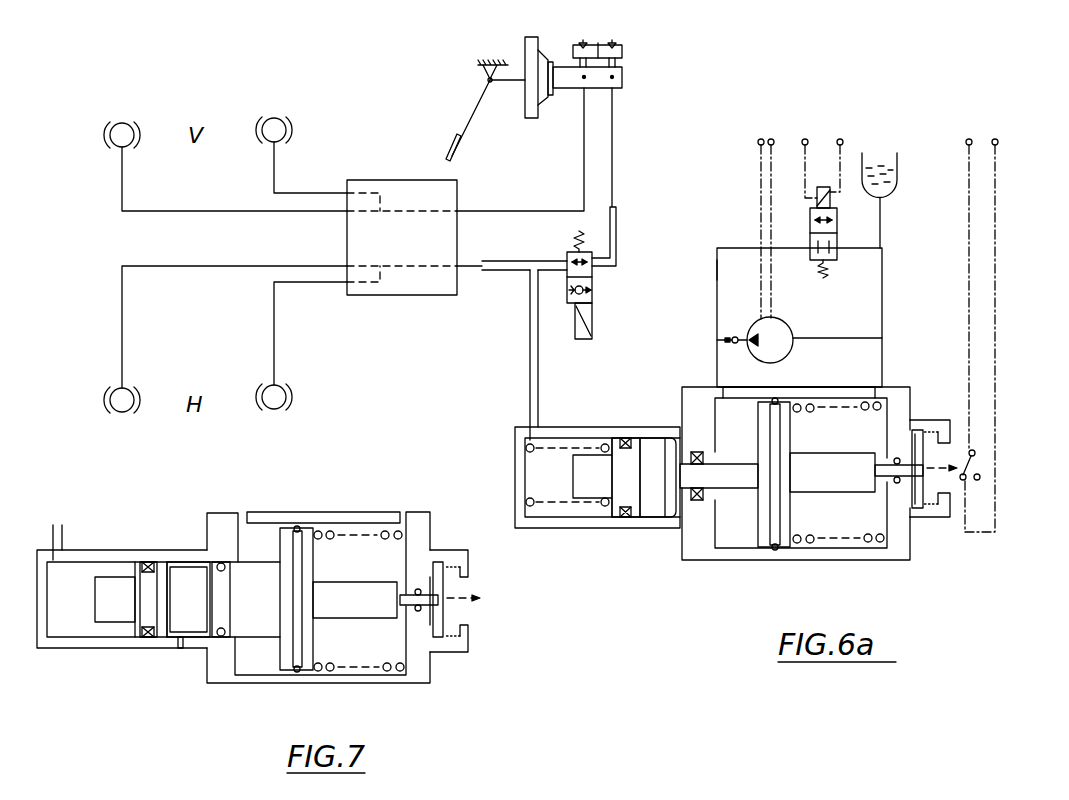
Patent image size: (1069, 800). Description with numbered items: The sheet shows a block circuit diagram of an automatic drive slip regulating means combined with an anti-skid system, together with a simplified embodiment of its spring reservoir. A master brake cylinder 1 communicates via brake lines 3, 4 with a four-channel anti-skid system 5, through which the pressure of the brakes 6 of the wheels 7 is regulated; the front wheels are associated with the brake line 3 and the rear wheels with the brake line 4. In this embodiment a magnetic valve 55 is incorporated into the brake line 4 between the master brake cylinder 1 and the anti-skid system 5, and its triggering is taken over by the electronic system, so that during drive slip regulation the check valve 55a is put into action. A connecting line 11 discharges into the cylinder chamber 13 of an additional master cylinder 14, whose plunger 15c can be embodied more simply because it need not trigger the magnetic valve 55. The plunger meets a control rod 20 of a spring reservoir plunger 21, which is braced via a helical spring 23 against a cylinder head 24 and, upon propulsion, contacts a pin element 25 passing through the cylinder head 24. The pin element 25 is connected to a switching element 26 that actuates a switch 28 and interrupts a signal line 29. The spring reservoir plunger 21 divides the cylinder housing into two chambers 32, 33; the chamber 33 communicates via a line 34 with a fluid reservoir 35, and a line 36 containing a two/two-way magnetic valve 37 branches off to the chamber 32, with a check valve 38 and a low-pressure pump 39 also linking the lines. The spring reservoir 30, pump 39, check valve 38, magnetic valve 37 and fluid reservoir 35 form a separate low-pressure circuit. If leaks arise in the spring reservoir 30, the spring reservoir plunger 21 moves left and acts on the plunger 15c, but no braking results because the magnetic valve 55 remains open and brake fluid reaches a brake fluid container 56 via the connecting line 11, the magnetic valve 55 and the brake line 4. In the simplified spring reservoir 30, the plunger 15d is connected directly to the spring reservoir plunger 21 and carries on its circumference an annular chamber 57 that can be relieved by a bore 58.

In FIG. 6A, the master brake cylinder 1 is at (562, 96).
In FIG. 6A, the brake line 3 is at (584, 176).
In FIG. 6A, the brake line 4 is at (613, 162).
In FIG. 6A, the four-channel anti-skid system 5 is at (347, 293).
In FIG. 6A, the brakes 6 is at (284, 122).
In FIG. 6A, the wheels 7 is at (128, 128).
In FIG. 6A, the connecting line 11 is at (530, 370).
In FIG. 6A, the cylinder chamber 13 is at (562, 489).
In FIG. 6A, the additional master cylinder 14 is at (575, 530).
In FIG. 7, the additional master cylinder 14 is at (100, 649).
In FIG. 6A, the plunger 15c is at (658, 503).
In FIG. 7, the plunger 15d is at (137, 650).
In FIG. 6A, the control rod 20 is at (777, 469).
In FIG. 6A, the spring reservoir plunger 21 is at (765, 548).
In FIG. 7, the spring reservoir plunger 21 is at (285, 660).
In FIG. 6A, the helical spring 23 is at (810, 544).
In FIG. 7, the helical spring 23 is at (332, 533).
In FIG. 6A, the cylinder head 24 is at (900, 546).
In FIG. 6A, the pin element 25 is at (893, 468).
In FIG. 7, the pin element 25 is at (408, 595).
In FIG. 6A, the switching element 26 is at (921, 500).
In FIG. 7, the switching element 26 is at (440, 617).
In FIG. 6A, the switch 28 is at (980, 466).
In FIG. 6A, the signal line 29 is at (969, 320).
In FIG. 6A, the spring reservoir 30 is at (858, 562).
In FIG. 7, the spring reservoir 30 is at (358, 685).
In FIG. 6A, the cylindrical chamber 32 is at (730, 541).
In FIG. 7, the cylindrical chamber 32 is at (257, 553).
In FIG. 6A, the cylindrical chamber 33 is at (840, 530).
In FIG. 7, the cylindrical chamber 33 is at (400, 664).
In FIG. 6A, the line 34 is at (882, 280).
In FIG. 6A, the fluid reservoir 35 is at (898, 168).
In FIG. 6A, the line 36 is at (717, 268).
In FIG. 6A, the 2/2-way magnetic valve 37 is at (838, 240).
In FIG. 6A, the check valve 38 is at (735, 336).
In FIG. 6A, the low-pressure pump 39 is at (788, 327).
In FIG. 6A, the magnetic valve 55 is at (594, 291).
In FIG. 6A, the check valve 55a is at (567, 298).
In FIG. 6A, the brake fluid container 56 is at (622, 54).
In FIG. 7, the annular chamber 57 is at (183, 563).
In FIG. 7, the bore 58 is at (179, 651).